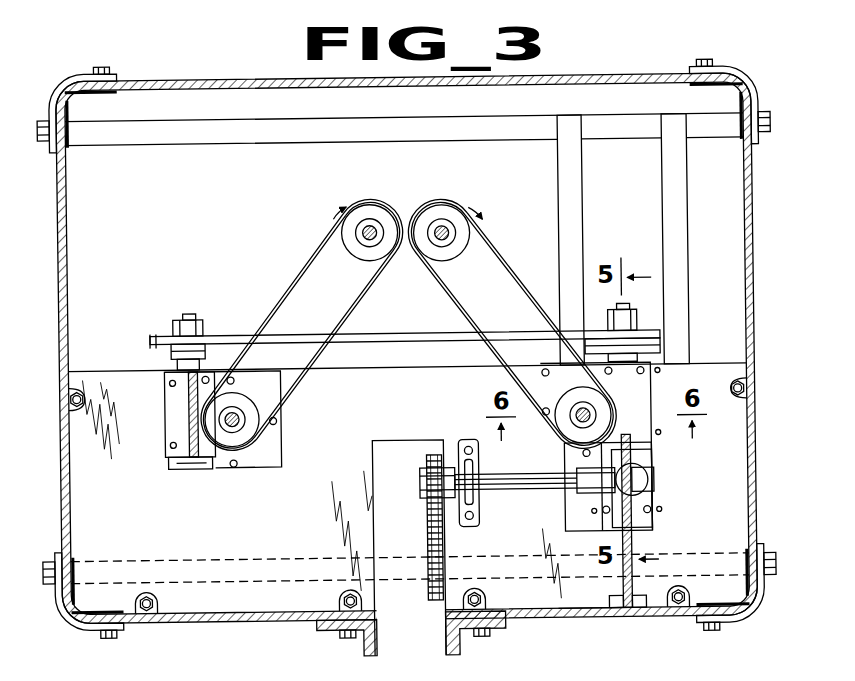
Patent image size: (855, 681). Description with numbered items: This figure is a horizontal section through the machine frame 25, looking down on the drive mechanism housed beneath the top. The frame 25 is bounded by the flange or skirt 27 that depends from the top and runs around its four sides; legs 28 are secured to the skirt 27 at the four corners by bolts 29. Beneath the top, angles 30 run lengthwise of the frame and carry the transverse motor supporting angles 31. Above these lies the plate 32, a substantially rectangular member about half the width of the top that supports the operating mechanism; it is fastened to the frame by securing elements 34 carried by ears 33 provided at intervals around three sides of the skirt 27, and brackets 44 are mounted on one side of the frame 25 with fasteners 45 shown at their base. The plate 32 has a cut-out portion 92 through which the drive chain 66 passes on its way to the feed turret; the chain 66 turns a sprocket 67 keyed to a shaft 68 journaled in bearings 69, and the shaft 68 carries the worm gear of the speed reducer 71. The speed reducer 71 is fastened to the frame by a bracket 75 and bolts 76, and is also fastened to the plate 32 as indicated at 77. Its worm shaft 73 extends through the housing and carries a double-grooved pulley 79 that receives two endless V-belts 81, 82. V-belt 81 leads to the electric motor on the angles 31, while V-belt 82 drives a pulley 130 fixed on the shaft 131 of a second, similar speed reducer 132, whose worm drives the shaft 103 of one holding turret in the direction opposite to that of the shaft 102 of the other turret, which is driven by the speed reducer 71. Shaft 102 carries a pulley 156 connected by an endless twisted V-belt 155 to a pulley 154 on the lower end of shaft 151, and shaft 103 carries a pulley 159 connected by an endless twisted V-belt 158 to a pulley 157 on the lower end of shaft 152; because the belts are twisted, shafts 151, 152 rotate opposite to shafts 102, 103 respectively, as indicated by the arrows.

The frame 25 is at (586, 615).
The flange or skirt 27 is at (65, 178).
The legs 28 is at (118, 80).
The bolts 29 is at (116, 50).
The angles 30 is at (528, 135).
The motor supporting angles 31 is at (665, 208).
The plate 32 is at (406, 404).
The ears 33 is at (70, 393).
The securing elements 34 is at (70, 402).
The brackets 44 is at (446, 650).
The bracket nut 45 is at (343, 638).
The chain 66 is at (425, 530).
The sprocket 67 is at (418, 486).
The shaft 68 is at (533, 490).
The bearings 69 is at (478, 482).
The speed reducer 71 is at (640, 460).
The shaft 73 is at (621, 311).
The bracket 75 is at (604, 512).
The bolts 76 is at (630, 611).
The fastening of speed reducer to plate 77 is at (658, 432).
The pulley 79 is at (625, 326).
The V-belt 81 is at (656, 348).
The V-belt 82 is at (428, 328).
The cut-out portion 92 is at (372, 462).
The shaft 102 is at (576, 418).
The shaft 103 is at (240, 421).
The pulley 130 is at (204, 326).
The shaft 131 is at (190, 311).
The speed reducer 132 is at (210, 460).
The shaft 151 is at (443, 225).
The shaft 152 is at (378, 224).
The pulley 154 is at (465, 233).
The twisted V-belt 155 is at (494, 286).
The pulley 156 is at (599, 412).
The pulley 157 is at (350, 233).
The twisted V-belt 158 is at (323, 279).
The pulley 159 is at (216, 420).